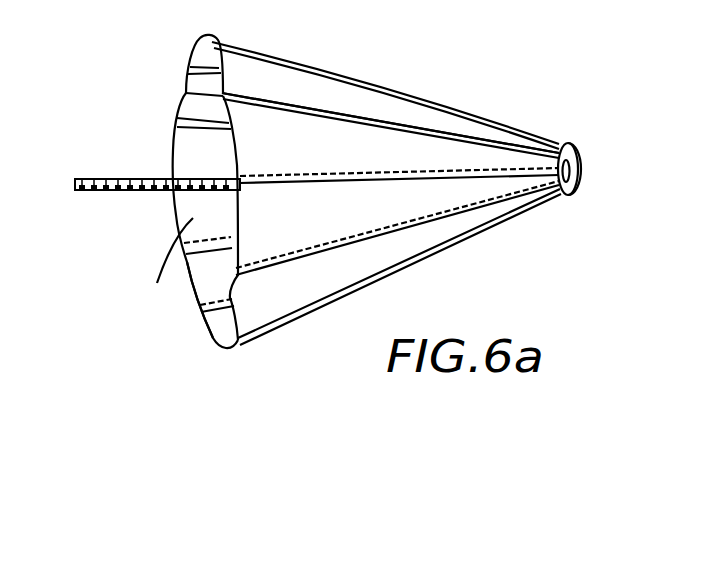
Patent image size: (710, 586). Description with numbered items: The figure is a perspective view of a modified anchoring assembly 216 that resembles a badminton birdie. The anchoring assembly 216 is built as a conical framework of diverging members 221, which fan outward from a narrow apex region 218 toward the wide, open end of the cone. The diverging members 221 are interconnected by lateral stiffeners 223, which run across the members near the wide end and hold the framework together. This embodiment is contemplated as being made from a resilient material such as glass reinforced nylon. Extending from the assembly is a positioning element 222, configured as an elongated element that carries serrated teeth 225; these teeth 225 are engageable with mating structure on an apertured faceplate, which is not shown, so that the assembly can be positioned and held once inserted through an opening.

The anchoring assembly 216 is at (407, 70).
The hub 218 is at (575, 190).
The diverging members 221 is at (493, 142).
The positioning element 222 is at (131, 180).
The lateral stiffeners 223 is at (208, 274).
The serrated teeth 225 is at (120, 194).